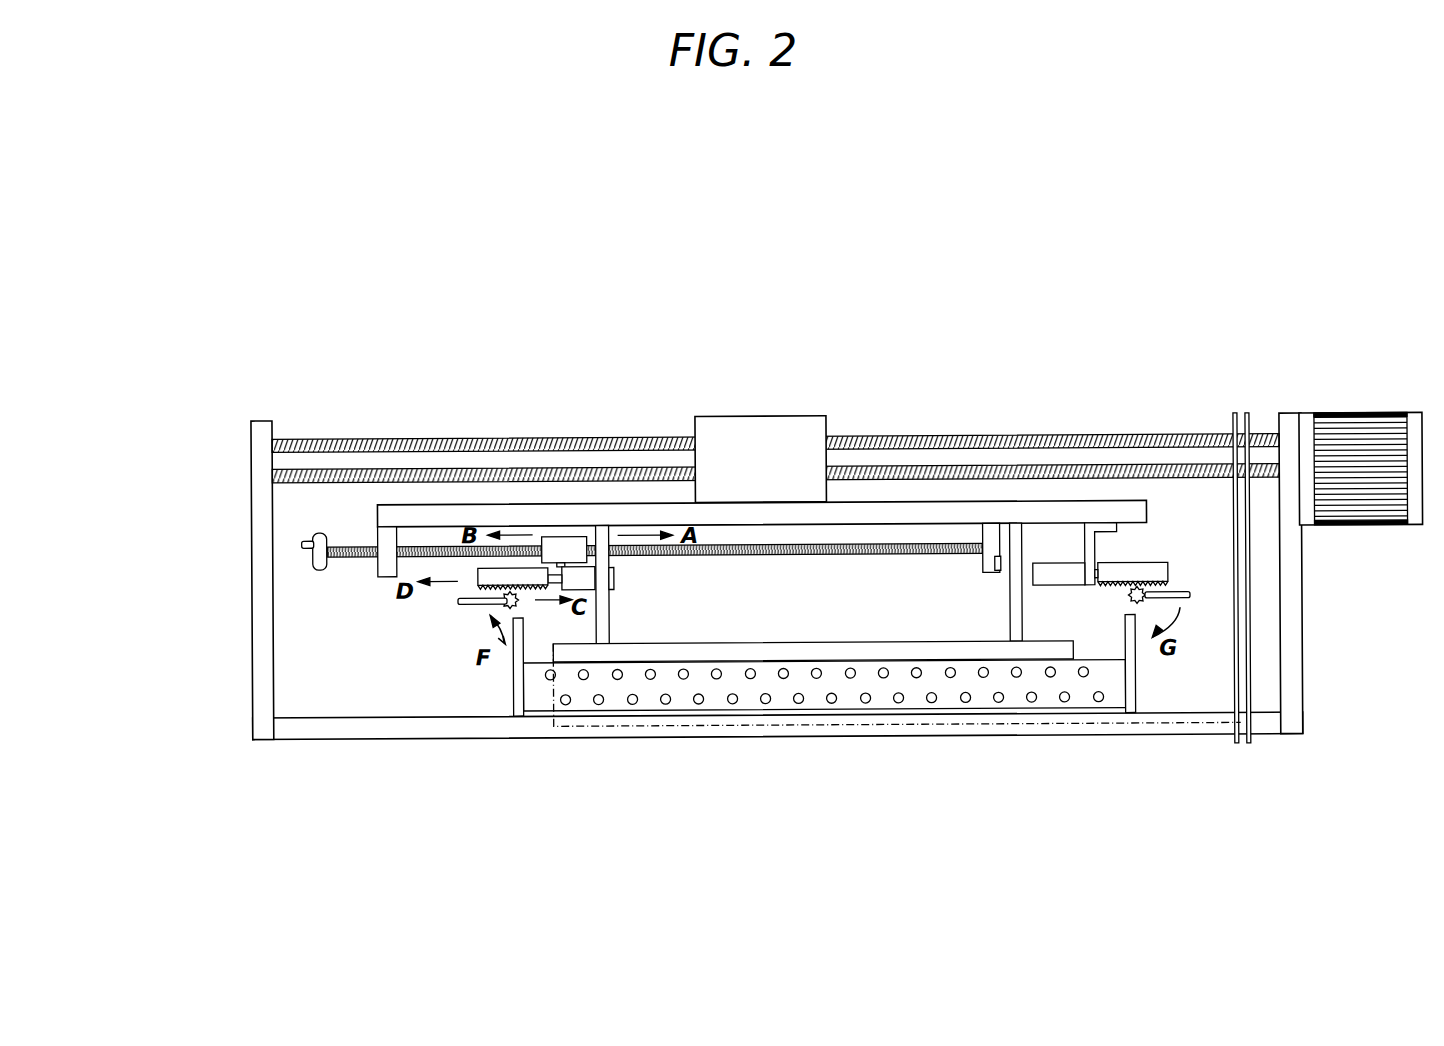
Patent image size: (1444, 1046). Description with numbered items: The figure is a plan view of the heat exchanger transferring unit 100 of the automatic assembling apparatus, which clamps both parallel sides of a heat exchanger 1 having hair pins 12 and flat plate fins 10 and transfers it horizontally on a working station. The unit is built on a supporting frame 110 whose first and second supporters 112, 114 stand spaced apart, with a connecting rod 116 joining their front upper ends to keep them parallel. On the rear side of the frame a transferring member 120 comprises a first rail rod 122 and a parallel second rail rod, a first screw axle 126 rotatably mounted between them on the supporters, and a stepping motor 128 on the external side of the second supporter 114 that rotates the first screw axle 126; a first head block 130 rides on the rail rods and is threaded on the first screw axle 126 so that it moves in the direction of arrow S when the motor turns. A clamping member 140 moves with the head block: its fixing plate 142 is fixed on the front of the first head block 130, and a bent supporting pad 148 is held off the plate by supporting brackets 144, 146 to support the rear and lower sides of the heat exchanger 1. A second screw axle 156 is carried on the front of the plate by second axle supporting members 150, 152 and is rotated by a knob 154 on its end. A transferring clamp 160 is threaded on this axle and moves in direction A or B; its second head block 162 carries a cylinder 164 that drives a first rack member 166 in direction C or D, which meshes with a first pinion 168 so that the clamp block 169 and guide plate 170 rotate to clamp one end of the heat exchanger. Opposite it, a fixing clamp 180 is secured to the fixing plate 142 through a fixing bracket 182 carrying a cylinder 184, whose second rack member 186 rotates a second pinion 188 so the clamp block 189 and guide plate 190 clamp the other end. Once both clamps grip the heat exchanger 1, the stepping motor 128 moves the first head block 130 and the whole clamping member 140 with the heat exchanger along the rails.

The heat exchanger 1 is at (533, 699).
The flat plate fins 10 is at (808, 694).
The hair pins 12 is at (728, 704).
The heat exchanger transferring unit 100 is at (340, 417).
The supporting frame 110 is at (1311, 750).
The first supporter 112 is at (265, 726).
The second supporter 114 is at (1238, 645).
The connecting rod 116 is at (1217, 730).
The transferring member 120 is at (1036, 423).
The first rail rod 122 is at (955, 437).
The first screw axle 126 is at (990, 467).
The stepping motor 128 is at (1356, 417).
The first head block 130 is at (748, 416).
The clamping member 140 is at (422, 490).
The fixing plate 142 is at (603, 525).
The supporting bracket 144 is at (600, 543).
The supporting bracket 146 is at (1020, 580).
The supporting pad 148 is at (933, 654).
The second axle supporting member 150 is at (378, 572).
The second axle supporting member 152 is at (995, 560).
The knob 154 is at (314, 552).
The second screw axle 156 is at (332, 528).
The transferring clamp 160 is at (493, 612).
The second head block 162 is at (560, 535).
The cylinder 164 is at (598, 580).
The first rack member 166 is at (478, 579).
The first pinion 168 is at (492, 607).
The clamp block 169 is at (468, 603).
The clamp block 170 is at (513, 671).
The fixing clamp 180 is at (1199, 565).
The fixing bracket 182 is at (1103, 527).
The cylinder 184 is at (1057, 565).
The second rack member 186 is at (1213, 577).
The second pinion 188 is at (1147, 602).
The clamp block 189 is at (1190, 600).
The clamp block 190 is at (1135, 686).
The arrow S is at (895, 409).